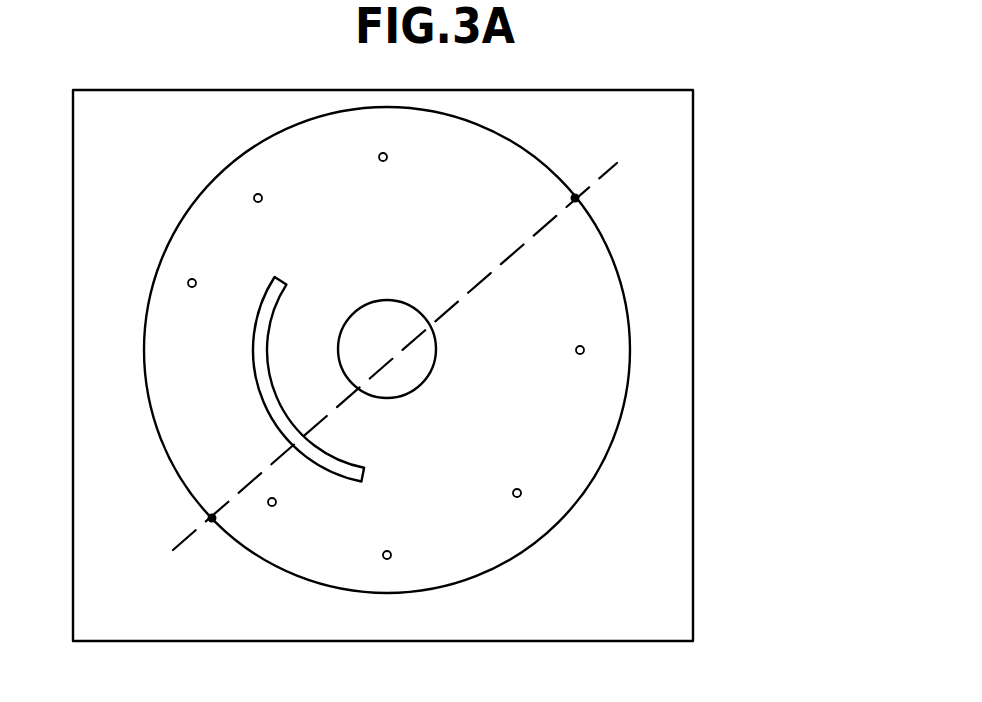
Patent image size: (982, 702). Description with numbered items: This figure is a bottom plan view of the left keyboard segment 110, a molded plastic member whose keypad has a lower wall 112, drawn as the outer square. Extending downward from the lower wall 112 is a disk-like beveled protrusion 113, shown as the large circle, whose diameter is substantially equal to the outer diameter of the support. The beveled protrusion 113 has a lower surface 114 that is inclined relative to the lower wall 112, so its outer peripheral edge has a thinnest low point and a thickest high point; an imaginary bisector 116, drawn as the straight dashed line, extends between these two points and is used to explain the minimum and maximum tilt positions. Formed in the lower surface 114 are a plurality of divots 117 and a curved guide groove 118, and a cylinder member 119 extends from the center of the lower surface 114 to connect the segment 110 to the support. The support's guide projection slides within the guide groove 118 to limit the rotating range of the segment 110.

The left keyboard segment 110 is at (713, 287).
The lower wall 112 is at (628, 543).
The beveled protrusion 113 is at (426, 366).
The lower surface 114 is at (500, 538).
The imaginary bisector 116 is at (478, 282).
The divots 117 is at (380, 155).
The guide groove 118 is at (260, 400).
The cylinder member 119 is at (437, 360).